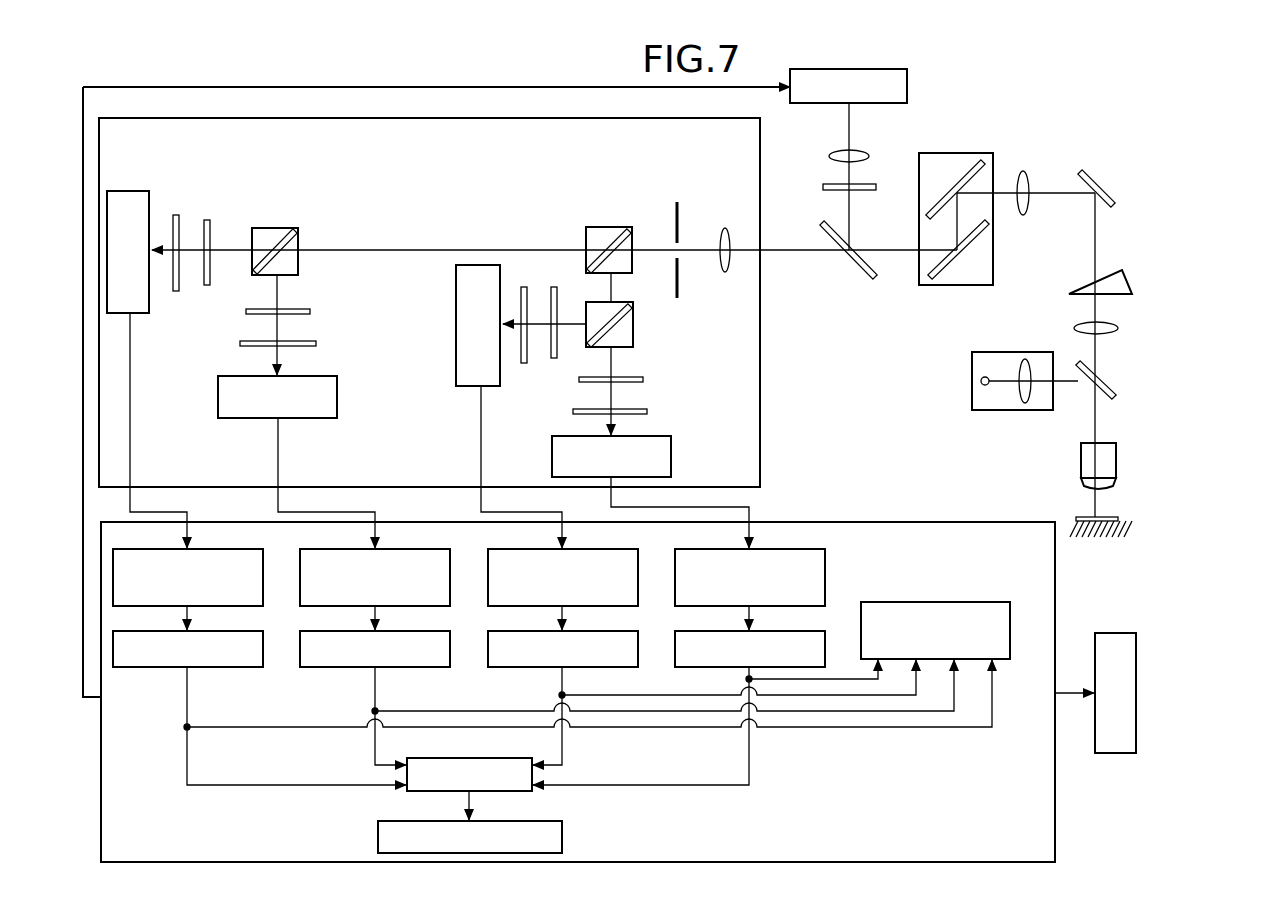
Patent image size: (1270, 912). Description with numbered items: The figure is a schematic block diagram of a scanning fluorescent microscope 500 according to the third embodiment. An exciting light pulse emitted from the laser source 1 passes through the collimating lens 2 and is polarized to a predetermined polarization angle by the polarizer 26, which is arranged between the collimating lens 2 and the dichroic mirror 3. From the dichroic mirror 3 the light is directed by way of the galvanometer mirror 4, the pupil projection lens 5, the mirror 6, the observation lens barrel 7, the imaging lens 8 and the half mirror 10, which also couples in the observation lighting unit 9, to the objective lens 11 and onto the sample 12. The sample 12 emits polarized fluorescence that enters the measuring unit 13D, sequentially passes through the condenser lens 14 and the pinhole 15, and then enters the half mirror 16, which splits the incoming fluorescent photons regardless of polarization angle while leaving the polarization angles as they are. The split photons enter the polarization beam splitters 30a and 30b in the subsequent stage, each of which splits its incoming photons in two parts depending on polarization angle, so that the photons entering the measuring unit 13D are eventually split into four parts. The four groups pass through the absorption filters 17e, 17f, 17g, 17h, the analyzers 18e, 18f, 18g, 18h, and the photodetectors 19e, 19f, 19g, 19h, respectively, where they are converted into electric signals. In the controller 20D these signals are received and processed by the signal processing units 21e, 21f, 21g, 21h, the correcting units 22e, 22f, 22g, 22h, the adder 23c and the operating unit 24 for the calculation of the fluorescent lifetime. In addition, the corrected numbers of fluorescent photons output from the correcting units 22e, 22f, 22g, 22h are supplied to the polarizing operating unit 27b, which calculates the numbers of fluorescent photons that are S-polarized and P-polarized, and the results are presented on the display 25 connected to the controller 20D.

The scanning fluorescent microscope 500 is at (1158, 118).
The laser source 1 is at (907, 86).
The collimating lens 2 is at (864, 150).
The polarizer 26 is at (823, 187).
The dichroic mirror 3 is at (851, 264).
The galvanometer mirror 4 is at (992, 152).
The pupil projection lens 5 is at (1024, 215).
The mirror 6 is at (1106, 183).
The observation lens barrel 7 is at (1134, 288).
The imaging lens 8 is at (1118, 328).
The observation lighting unit 9 is at (1010, 410).
The half mirror 10 is at (1114, 391).
The objective lens 11 is at (1117, 460).
The sample 12 is at (1119, 518).
The measuring unit 13D is at (668, 118).
The condenser lens 14 is at (726, 228).
The pinhole 15 is at (678, 284).
The half mirror 16 is at (606, 236).
The absorption filter 17e is at (578, 379).
The absorption filter 17f is at (554, 287).
The absorption filter 17g is at (310, 312).
The absorption filter 17h is at (207, 285).
The analyzer 18e is at (647, 411).
The analyzer 18f is at (524, 287).
The analyzer 18g is at (316, 344).
The analyzer 18h is at (176, 215).
The photodetector 19e is at (671, 455).
The photodetector 19f is at (455, 318).
The photodetector 19g is at (337, 396).
The photodetector 19h is at (131, 191).
The polarization beam splitter 30a is at (622, 322).
The polarization beam splitter 30b is at (286, 228).
The controller 20D is at (852, 522).
The signal processing unit 21e is at (799, 549).
The signal processing unit 21f is at (612, 549).
The signal processing unit 21g is at (424, 549).
The signal processing unit 21h is at (236, 549).
The correcting unit 22e is at (799, 631).
The correcting unit 22f is at (612, 631).
The correcting unit 22g is at (424, 631).
The correcting unit 22h is at (236, 631).
The adder 23c is at (505, 758).
The operating unit 24 is at (504, 821).
The display 25 is at (1112, 633).
The polarizing operating unit 27b is at (990, 602).